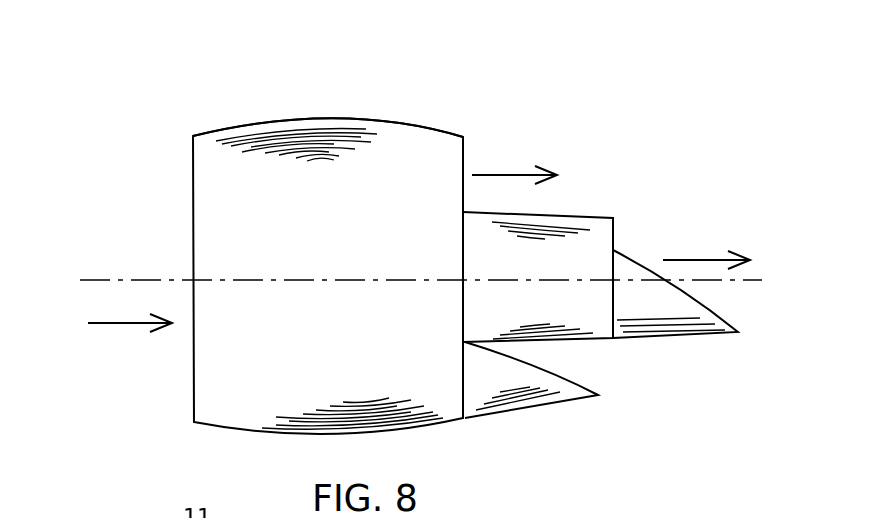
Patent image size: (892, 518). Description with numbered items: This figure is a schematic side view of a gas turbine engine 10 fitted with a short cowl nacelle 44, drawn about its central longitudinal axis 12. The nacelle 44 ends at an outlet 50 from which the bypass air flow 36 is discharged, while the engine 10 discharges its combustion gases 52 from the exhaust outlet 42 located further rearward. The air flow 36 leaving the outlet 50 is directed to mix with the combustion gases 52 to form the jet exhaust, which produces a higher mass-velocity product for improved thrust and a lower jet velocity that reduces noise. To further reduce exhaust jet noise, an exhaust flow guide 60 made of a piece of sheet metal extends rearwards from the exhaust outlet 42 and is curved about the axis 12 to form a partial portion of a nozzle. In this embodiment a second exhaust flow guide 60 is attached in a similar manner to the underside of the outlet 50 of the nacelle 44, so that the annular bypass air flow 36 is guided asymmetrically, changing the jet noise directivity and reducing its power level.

The gas turbine engine 10 is at (292, 115).
The central longitudinal axis 12 is at (747, 283).
The air flow 36 is at (125, 327).
The exhaust outlet 42 is at (613, 230).
The nacelle 44 is at (377, 120).
The outlet 50 is at (465, 148).
The combustion gases 52 is at (712, 258).
The exhaust flow guide 60 is at (641, 266).